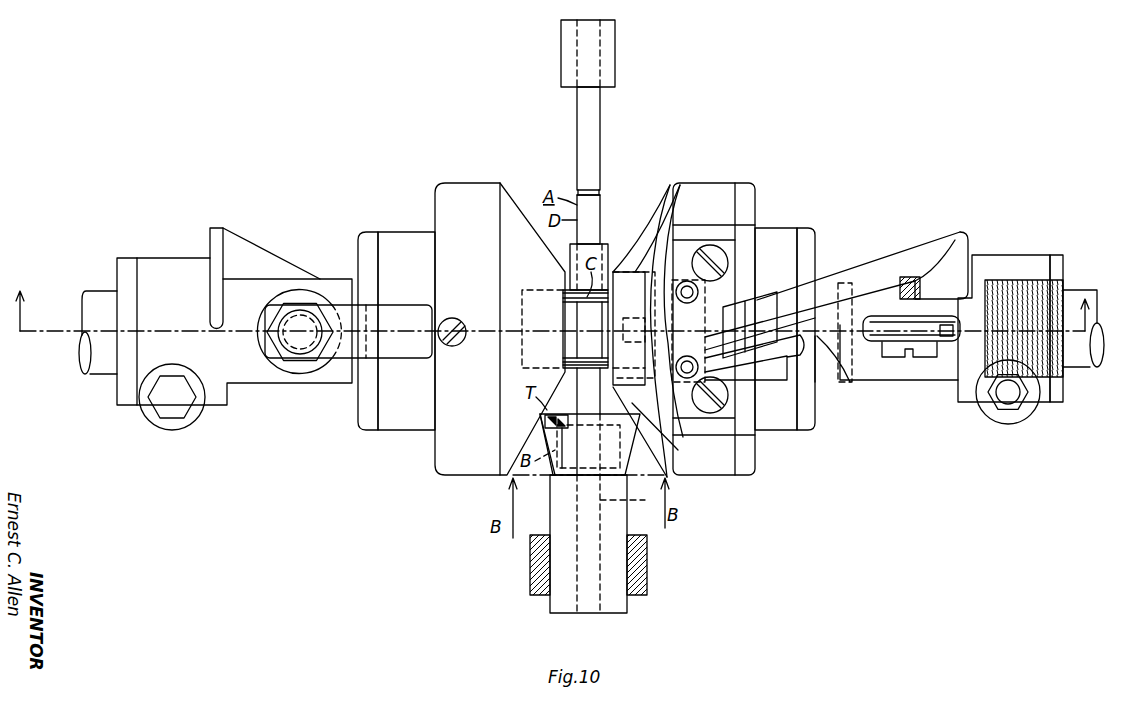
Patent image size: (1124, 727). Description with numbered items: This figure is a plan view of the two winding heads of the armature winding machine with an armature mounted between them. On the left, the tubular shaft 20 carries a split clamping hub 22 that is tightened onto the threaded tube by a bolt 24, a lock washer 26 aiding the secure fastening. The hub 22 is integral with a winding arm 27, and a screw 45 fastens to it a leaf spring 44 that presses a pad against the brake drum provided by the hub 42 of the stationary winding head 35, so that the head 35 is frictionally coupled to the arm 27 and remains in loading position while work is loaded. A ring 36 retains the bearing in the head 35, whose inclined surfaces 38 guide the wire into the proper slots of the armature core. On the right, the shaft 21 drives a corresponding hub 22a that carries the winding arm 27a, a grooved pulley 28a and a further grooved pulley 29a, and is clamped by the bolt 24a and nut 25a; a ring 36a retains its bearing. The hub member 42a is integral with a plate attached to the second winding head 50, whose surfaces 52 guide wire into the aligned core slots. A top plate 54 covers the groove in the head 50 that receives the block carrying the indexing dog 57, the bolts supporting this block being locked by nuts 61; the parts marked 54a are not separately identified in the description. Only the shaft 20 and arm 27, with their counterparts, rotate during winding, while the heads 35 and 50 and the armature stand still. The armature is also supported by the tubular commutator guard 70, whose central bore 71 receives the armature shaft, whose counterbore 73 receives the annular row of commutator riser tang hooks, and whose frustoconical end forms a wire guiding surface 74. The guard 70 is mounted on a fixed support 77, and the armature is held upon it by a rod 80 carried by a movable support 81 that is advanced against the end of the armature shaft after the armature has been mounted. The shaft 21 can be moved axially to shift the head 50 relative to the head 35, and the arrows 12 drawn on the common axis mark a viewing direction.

The section line indicator 12 is at (552, 299).
The tubular shaft 20 is at (90, 292).
The shaft 21 is at (1087, 362).
The clamping hub 22 is at (185, 258).
The hub 22a is at (1008, 255).
The bolt 24 is at (164, 405).
The bolt 24a is at (1007, 391).
The nut 25a is at (1007, 417).
The lock washer 26 is at (127, 258).
The winding arm 27 is at (284, 258).
The winding arm 27a is at (857, 290).
The grooved pulley 28a is at (707, 347).
The grooved pulley 29a is at (875, 342).
The winding head 35 is at (463, 183).
The ring 36 is at (368, 232).
The ring 36a is at (800, 424).
The inclined surfaces 38 is at (500, 251).
The hub 42 is at (400, 232).
The hub member 42a is at (783, 418).
The leaf spring 44 is at (393, 305).
The screw 45 is at (299, 305).
The winding head 50 is at (702, 183).
The surfaces 52 is at (640, 250).
The top plate 54 is at (702, 231).
The screws 54a is at (718, 258).
The indexing dog 57 is at (607, 318).
The nuts 61 is at (687, 355).
The commutator guard 70 is at (548, 503).
The central bore 71 is at (635, 513).
The counterbore 73 is at (543, 418).
The wire guiding surface 74 is at (540, 441).
The fixed support 77 is at (529, 575).
The rod 80 is at (577, 123).
The movable support 81 is at (561, 52).